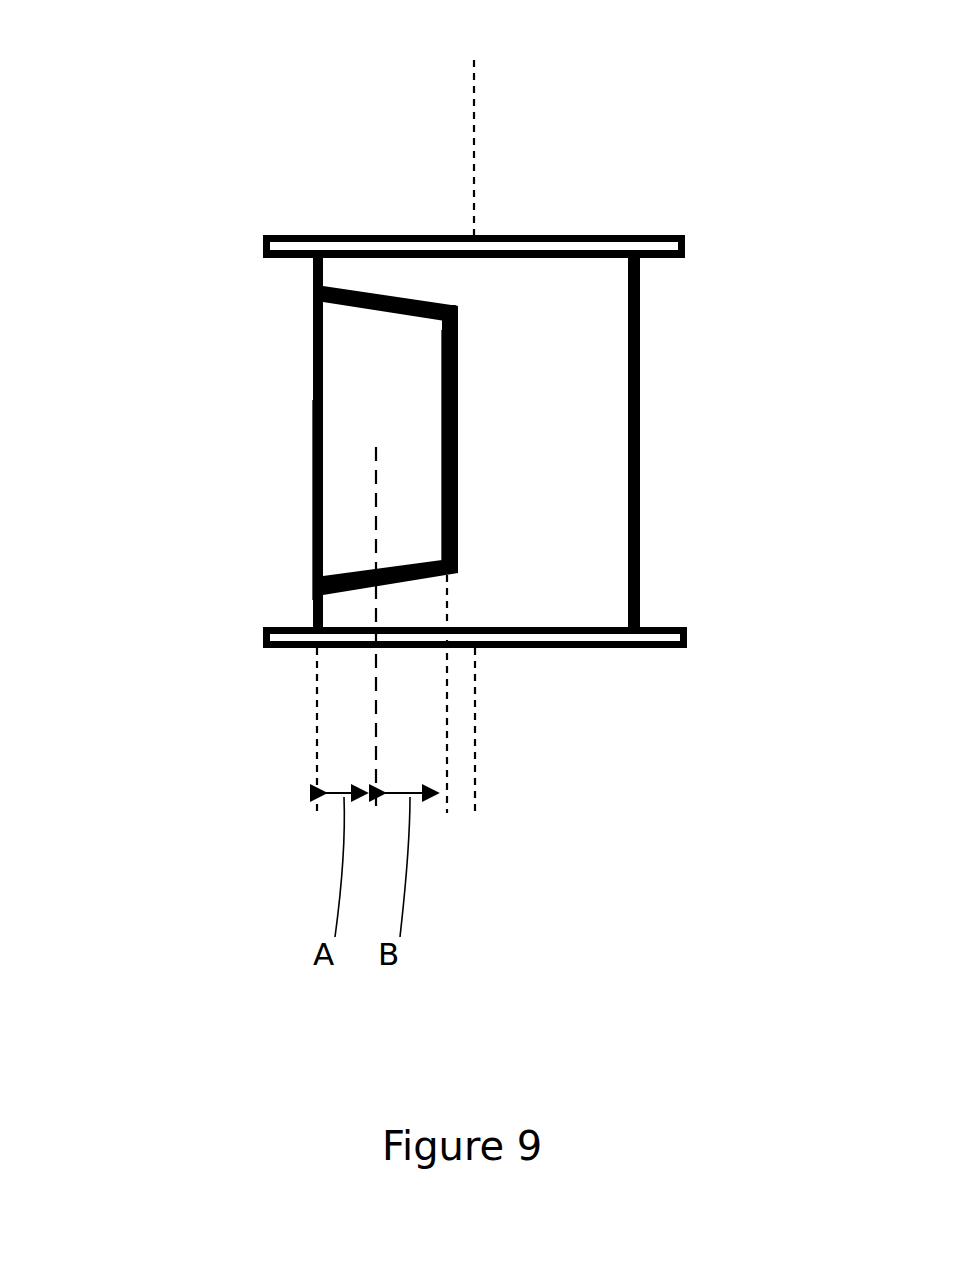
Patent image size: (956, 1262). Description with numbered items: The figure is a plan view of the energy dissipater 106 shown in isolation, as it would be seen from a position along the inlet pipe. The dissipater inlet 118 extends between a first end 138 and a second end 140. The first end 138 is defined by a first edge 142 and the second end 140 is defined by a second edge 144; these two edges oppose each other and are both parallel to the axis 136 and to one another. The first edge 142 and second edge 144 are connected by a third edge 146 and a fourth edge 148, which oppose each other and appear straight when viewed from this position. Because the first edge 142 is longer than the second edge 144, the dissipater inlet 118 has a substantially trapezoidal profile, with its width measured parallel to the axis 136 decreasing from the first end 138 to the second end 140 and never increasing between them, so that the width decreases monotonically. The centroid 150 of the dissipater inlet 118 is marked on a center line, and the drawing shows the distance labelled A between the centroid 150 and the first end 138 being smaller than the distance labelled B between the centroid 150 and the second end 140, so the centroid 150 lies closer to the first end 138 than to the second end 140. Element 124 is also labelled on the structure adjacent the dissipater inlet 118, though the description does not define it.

The energy dissipater 106 is at (252, 117).
The dissipater inlet 118 is at (482, 357).
The support post 124 is at (640, 318).
The axis 136 is at (473, 110).
The first end 138 is at (295, 450).
The second end 140 is at (475, 440).
The first edge 142 is at (313, 497).
The second edge 144 is at (457, 508).
The third edge 146 is at (347, 573).
The fourth edge 148 is at (394, 298).
The centroid 150 is at (377, 447).